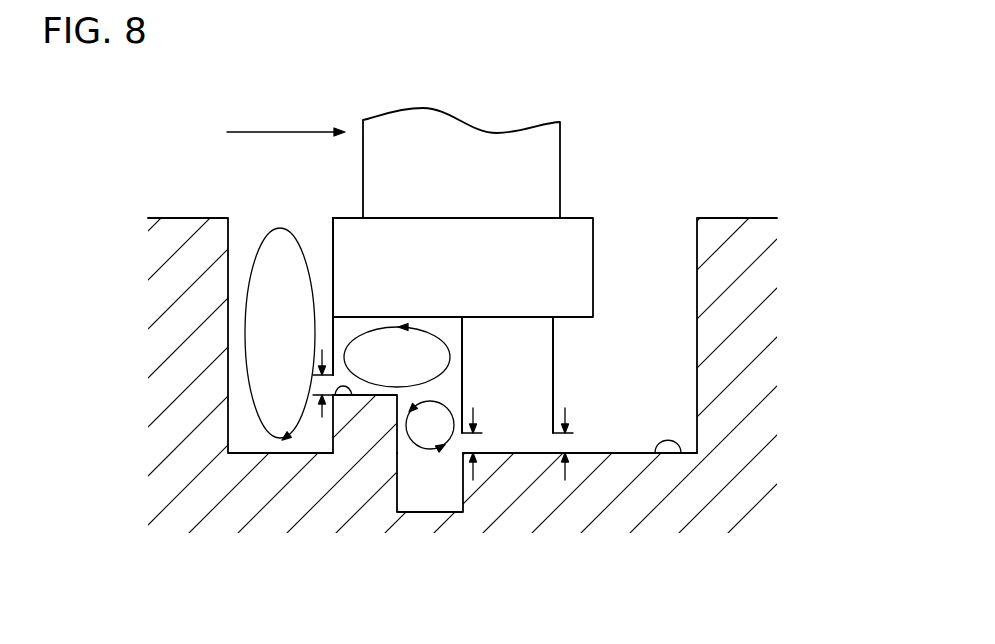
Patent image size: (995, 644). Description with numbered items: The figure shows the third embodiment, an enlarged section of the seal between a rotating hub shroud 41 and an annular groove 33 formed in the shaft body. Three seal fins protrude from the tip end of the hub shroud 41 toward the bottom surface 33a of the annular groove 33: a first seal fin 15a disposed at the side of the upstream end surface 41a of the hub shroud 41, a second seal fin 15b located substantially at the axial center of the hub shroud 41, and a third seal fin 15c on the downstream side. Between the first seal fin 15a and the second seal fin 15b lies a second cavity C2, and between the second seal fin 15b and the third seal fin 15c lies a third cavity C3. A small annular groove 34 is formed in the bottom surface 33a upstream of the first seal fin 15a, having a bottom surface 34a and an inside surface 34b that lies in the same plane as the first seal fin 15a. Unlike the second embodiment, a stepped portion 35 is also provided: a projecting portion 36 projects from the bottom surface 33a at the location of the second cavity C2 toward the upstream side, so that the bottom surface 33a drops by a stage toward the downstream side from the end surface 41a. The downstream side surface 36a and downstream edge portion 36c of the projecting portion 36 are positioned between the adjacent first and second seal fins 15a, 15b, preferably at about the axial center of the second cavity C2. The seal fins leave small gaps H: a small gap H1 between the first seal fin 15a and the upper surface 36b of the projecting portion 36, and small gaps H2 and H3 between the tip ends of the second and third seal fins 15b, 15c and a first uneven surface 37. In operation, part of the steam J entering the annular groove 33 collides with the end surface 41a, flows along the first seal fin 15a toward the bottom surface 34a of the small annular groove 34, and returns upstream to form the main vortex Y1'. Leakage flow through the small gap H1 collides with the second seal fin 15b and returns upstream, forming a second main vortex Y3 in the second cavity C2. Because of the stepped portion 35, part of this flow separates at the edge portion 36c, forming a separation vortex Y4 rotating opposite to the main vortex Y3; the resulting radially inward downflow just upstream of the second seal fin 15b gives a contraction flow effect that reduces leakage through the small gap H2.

The steam J is at (280, 132).
The hub shroud 41 is at (348, 218).
The end surface 41a is at (333, 240).
The annular groove 33 is at (697, 272).
The bottom surface 33a is at (681, 453).
The small annular groove 34 is at (280, 494).
The bottom surface 34a is at (258, 453).
The inside surface 34b is at (334, 395).
The projecting portion 36 is at (435, 481).
The side surface 36a is at (398, 445).
The upper surface 36b is at (350, 395).
The edge portion 36c is at (352, 388).
The stepped portion 35 is at (400, 400).
The first uneven surface 37 is at (620, 453).
The first seal fin 15a is at (335, 343).
The second seal fin 15b is at (478, 317).
The third seal fin 15c is at (553, 340).
The second cavity C2 is at (398, 360).
The third cavity C3 is at (525, 380).
The main vortex Y1' is at (203, 334).
The main vortex Y3 is at (450, 333).
The separation vortex Y4 is at (457, 403).
The small gap H is at (446, 484).
The small gap H1 is at (322, 418).
The small gap H2 is at (475, 462).
The small gap H3 is at (567, 462).